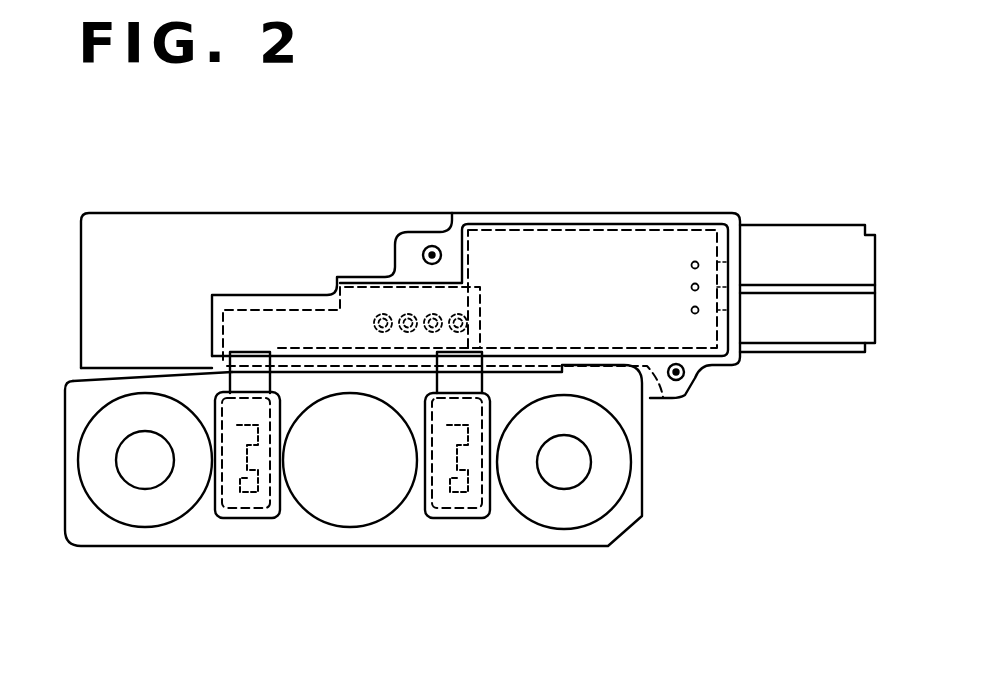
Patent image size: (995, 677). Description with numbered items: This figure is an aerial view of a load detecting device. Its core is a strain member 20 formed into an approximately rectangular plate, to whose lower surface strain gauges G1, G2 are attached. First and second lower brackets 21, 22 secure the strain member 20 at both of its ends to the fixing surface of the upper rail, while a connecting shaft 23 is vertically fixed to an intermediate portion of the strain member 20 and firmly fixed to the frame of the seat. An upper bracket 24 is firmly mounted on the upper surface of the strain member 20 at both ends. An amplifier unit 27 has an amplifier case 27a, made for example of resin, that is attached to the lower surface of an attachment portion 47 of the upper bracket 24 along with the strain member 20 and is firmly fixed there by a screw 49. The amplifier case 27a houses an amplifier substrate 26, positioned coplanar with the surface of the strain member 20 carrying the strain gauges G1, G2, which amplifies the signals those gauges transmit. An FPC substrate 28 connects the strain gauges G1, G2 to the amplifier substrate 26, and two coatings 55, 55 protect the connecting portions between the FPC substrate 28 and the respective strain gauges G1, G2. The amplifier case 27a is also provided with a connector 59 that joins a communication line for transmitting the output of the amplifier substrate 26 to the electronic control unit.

The strain member 20 is at (403, 533).
The first lower bracket 21 is at (125, 510).
The second lower bracket 22 is at (585, 510).
The connecting shaft 23 is at (347, 522).
The upper bracket 24 is at (167, 211).
The amplifier substrate 26 is at (573, 247).
The amplifier unit 27 is at (654, 211).
The amplifier case 27a is at (447, 241).
The FPC substrate 28 is at (73, 381).
The attachment portion 47 is at (302, 227).
The screw 49 is at (677, 381).
The coating 55 is at (272, 513).
The connector 59 is at (837, 248).
The strain gauge G1 is at (243, 493).
The strain gauge G2 is at (460, 493).